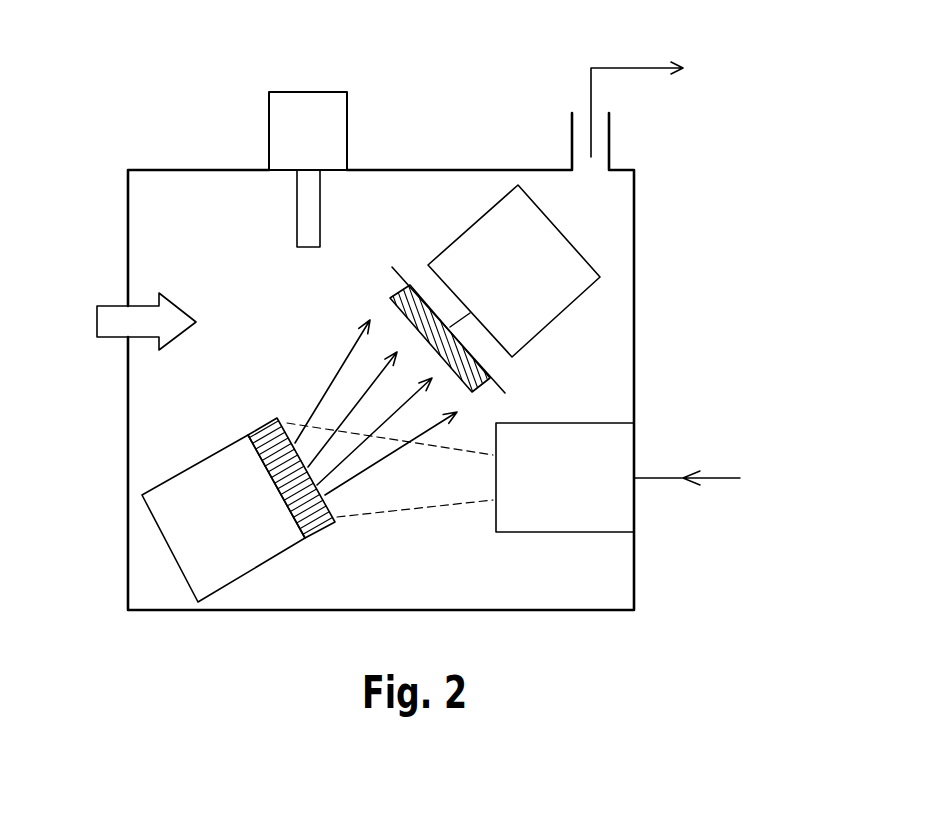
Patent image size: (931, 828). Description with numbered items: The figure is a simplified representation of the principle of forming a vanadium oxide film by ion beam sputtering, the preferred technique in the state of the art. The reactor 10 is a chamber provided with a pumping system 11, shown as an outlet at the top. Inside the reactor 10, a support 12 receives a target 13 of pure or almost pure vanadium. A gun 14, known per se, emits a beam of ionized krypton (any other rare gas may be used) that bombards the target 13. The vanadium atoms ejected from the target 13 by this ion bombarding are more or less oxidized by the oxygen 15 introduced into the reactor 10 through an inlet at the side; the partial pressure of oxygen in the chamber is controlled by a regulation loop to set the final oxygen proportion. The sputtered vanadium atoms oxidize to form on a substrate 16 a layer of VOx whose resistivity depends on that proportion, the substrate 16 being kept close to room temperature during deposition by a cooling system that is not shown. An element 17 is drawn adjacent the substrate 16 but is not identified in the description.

The reactor 10 is at (145, 143).
The pumping system 11 is at (631, 68).
The support 12 is at (223, 560).
The target 13 is at (313, 522).
The gun 14 is at (600, 513).
The oxygen 15 is at (110, 320).
The substrate 16 is at (504, 390).
The detector optical filter 17 is at (418, 313).